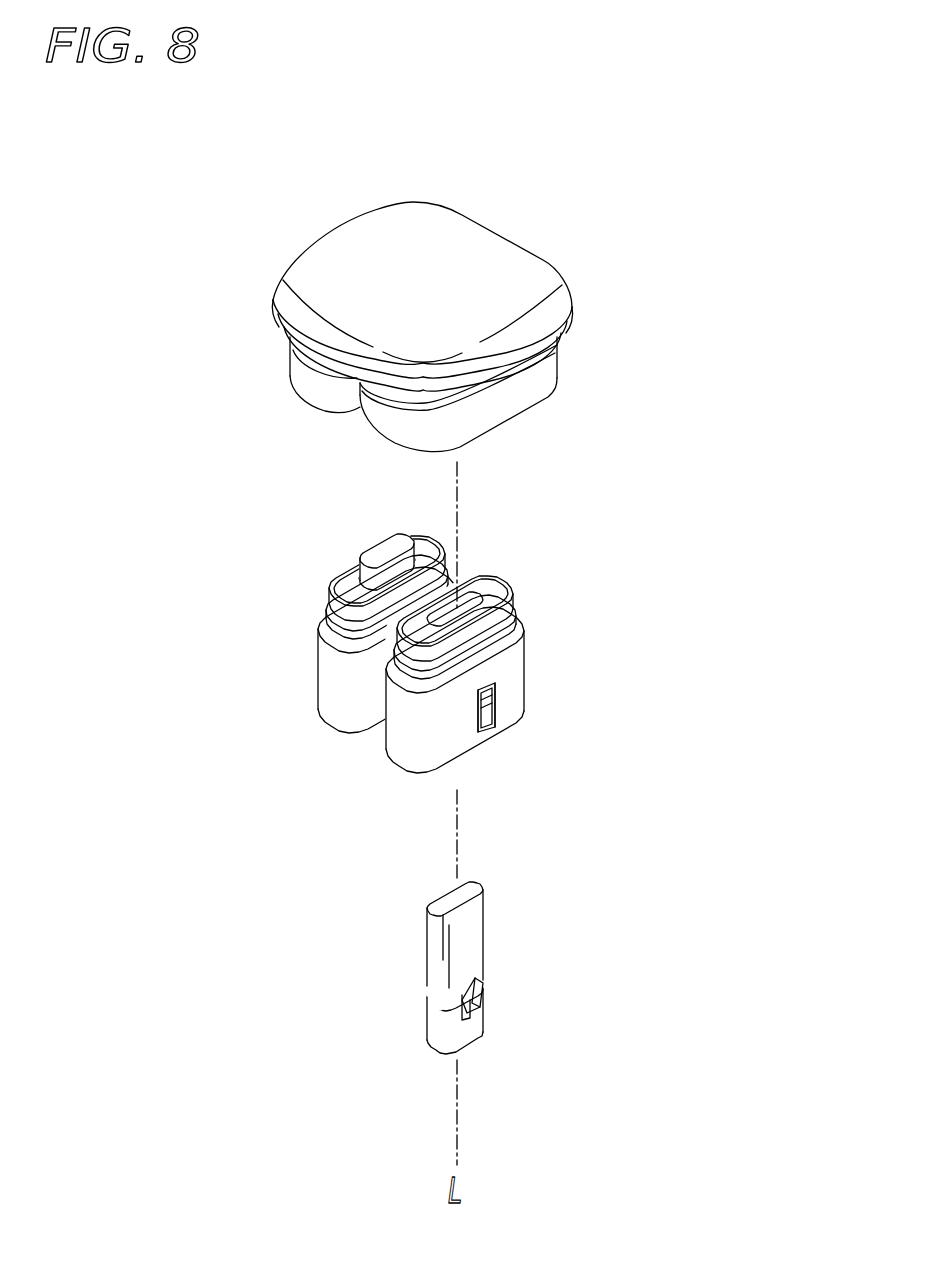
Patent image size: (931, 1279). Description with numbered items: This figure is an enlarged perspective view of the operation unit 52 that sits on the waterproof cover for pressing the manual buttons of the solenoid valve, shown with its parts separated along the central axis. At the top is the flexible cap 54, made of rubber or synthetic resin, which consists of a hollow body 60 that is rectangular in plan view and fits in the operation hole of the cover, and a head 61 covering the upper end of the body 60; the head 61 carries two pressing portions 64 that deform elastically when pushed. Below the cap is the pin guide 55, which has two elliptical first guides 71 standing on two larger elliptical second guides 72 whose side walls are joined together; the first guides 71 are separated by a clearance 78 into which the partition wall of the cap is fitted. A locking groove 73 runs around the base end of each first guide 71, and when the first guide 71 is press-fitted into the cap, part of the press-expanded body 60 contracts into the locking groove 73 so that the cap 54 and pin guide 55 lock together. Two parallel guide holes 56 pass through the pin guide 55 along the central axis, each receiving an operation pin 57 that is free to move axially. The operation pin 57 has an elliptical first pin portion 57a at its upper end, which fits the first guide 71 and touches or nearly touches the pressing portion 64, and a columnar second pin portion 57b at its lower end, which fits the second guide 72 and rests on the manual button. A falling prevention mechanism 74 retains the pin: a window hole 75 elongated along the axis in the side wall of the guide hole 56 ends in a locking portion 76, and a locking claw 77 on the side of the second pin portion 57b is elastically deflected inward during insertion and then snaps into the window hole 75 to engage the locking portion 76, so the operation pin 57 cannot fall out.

The operation unit 52 is at (451, 268).
The cap 54 is at (451, 240).
The head 61 is at (415, 202).
The pressing portion 64 is at (357, 280).
The body 60 is at (505, 400).
The pin guide 55 is at (425, 656).
The guide hole 56 is at (363, 568).
The operation pin 57 is at (386, 547).
The first pin portion 57a is at (437, 943).
The second pin portion 57b is at (438, 1022).
The clearance 78 is at (413, 600).
The first guide 71 is at (413, 569).
The locking groove 73 is at (360, 634).
The second guide 72 is at (343, 697).
The window hole 75 is at (487, 705).
The falling prevention mechanism 74 is at (505, 729).
The locking portion 76 is at (488, 735).
The locking claw 77 is at (475, 993).